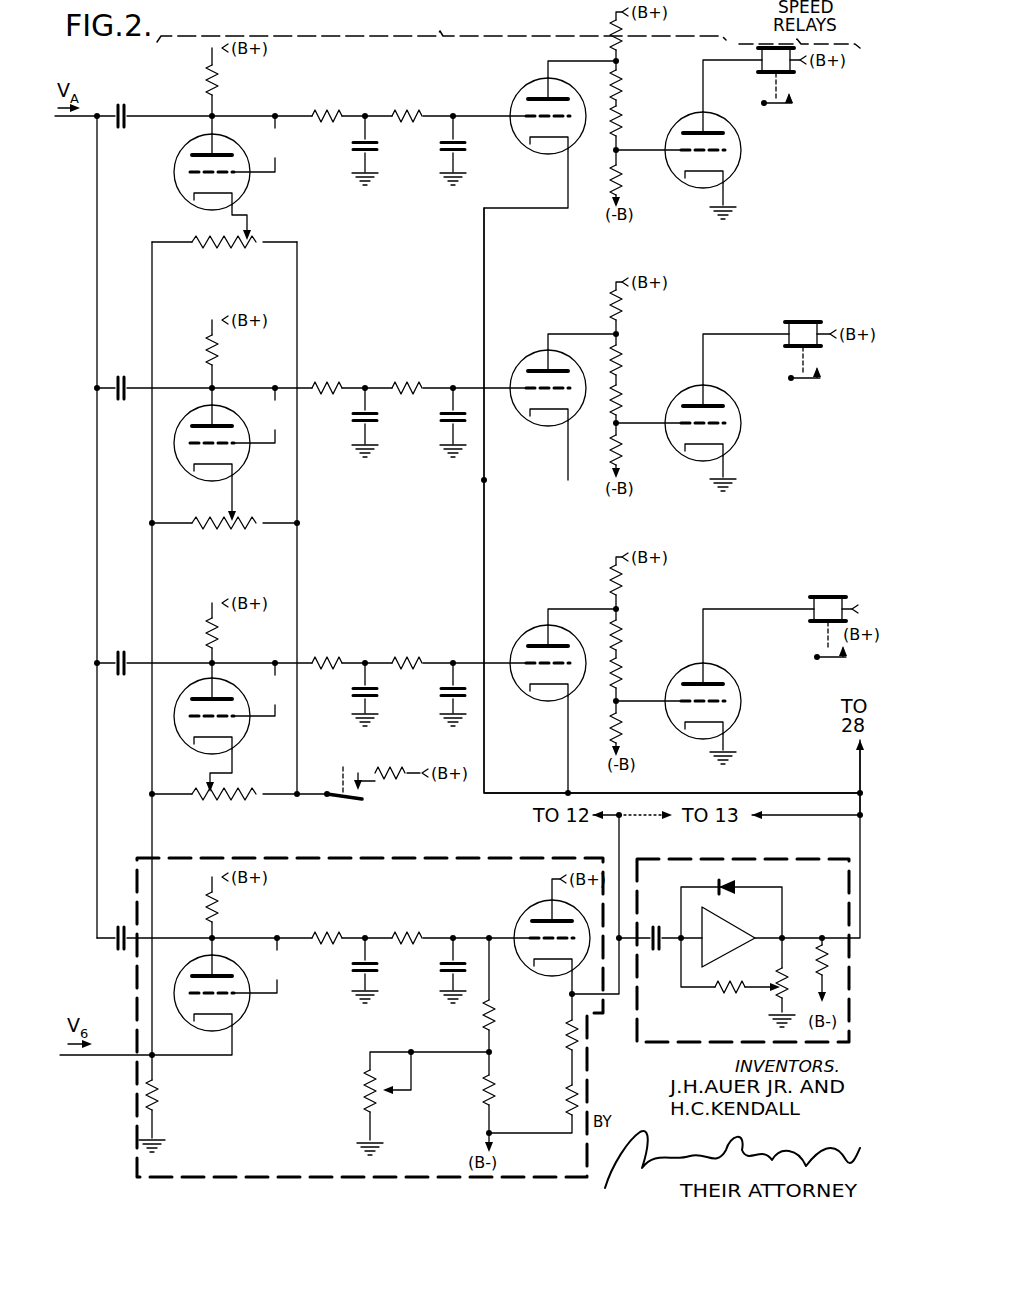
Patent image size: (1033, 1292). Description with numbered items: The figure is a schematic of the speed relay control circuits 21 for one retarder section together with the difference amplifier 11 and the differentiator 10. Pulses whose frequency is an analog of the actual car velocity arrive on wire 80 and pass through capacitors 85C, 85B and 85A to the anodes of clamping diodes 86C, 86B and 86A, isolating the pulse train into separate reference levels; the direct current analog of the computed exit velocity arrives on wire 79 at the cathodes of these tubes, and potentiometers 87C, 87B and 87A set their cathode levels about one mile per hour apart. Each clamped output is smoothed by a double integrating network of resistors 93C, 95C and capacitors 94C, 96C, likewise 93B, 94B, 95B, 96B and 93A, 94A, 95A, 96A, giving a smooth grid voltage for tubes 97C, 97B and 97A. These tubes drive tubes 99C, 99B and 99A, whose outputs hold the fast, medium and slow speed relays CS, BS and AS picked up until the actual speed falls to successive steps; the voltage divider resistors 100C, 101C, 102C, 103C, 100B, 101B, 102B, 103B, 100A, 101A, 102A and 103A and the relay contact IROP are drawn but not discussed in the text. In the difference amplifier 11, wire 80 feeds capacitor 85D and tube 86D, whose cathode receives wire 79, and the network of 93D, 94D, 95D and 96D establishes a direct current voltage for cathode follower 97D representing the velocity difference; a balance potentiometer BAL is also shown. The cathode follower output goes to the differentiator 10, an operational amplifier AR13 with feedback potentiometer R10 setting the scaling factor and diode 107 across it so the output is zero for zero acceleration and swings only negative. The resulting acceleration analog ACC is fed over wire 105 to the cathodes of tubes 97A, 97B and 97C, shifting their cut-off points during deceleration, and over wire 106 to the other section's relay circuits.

The speed relay control circuits 21 is at (441, 32).
The difference amplifier 11 is at (178, 858).
The differentiator 10 is at (640, 859).
The wire 80 is at (96, 122).
The wire 79 is at (152, 350).
The capacitor 85C is at (128, 94).
The capacitor 85B is at (121, 401).
The capacitor 85A is at (121, 651).
The capacitor 85D is at (118, 950).
The clamping diode 86C is at (177, 164).
The clamping diode 86B is at (187, 478).
The clamping diode 86A is at (188, 746).
The tube 86D is at (188, 1016).
The potentiometer 87C is at (225, 248).
The potentiometer 87B is at (228, 530).
The potentiometer 87A is at (245, 796).
The resistor 93C is at (332, 104).
The resistor 93B is at (325, 384).
The resistor 93A is at (323, 657).
The resistor 93D is at (332, 925).
The capacitor 94C is at (360, 148).
The capacitor 94B is at (356, 416).
The capacitor 94A is at (355, 688).
The capacitor 94D is at (356, 966).
The resistor 95C is at (406, 114).
The resistor 95B is at (406, 384).
The resistor 95A is at (405, 657).
The resistor 95D is at (412, 925).
The capacitor 96C is at (451, 150).
The capacitor 96B is at (450, 420).
The capacitor 96A is at (448, 691).
The capacitor 96D is at (450, 967).
The tube 97C is at (519, 87).
The tube 97B is at (519, 358).
The tube 97A is at (520, 636).
The cathode follower tube 97D is at (525, 911).
The tube 99C is at (741, 158).
The tube 99B is at (742, 428).
The tube 99A is at (736, 711).
The voltage divider resistor 100C is at (618, 44).
The voltage divider resistor 100B is at (618, 310).
The voltage divider resistor 100A is at (618, 583).
The voltage divider resistor 101C is at (618, 80).
The voltage divider resistor 101B is at (620, 358).
The voltage divider resistor 101A is at (620, 635).
The voltage divider resistor 102C is at (620, 128).
The voltage divider resistor 102B is at (621, 405).
The voltage divider resistor 102A is at (620, 683).
The voltage divider resistor 103C is at (618, 177).
The voltage divider resistor 103B is at (618, 453).
The voltage divider resistor 103A is at (618, 727).
The wire 105 is at (485, 288).
The wire 106 is at (858, 757).
The diode 107 is at (733, 892).
The speed relay CS is at (762, 67).
The speed relay BS is at (808, 320).
The speed relay AS is at (822, 596).
The relay contact IROP is at (364, 769).
The acceleration ACC is at (858, 777).
The balance potentiometer BAL is at (378, 1100).
The operational amplifier AR13 is at (728, 937).
The potentiometer R10 is at (778, 999).